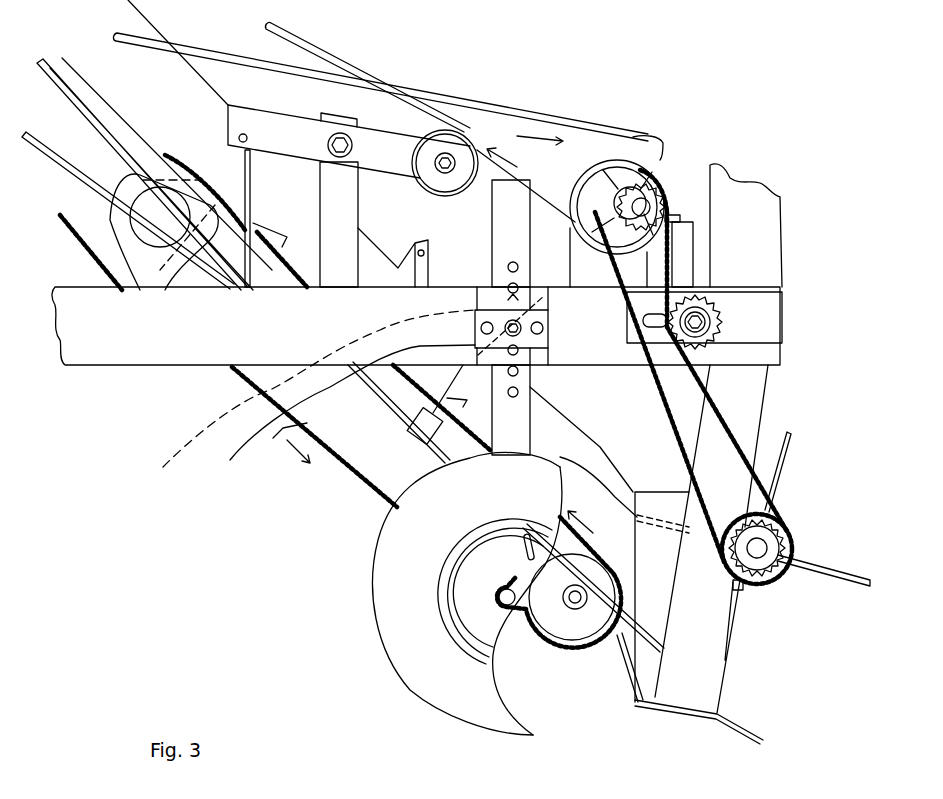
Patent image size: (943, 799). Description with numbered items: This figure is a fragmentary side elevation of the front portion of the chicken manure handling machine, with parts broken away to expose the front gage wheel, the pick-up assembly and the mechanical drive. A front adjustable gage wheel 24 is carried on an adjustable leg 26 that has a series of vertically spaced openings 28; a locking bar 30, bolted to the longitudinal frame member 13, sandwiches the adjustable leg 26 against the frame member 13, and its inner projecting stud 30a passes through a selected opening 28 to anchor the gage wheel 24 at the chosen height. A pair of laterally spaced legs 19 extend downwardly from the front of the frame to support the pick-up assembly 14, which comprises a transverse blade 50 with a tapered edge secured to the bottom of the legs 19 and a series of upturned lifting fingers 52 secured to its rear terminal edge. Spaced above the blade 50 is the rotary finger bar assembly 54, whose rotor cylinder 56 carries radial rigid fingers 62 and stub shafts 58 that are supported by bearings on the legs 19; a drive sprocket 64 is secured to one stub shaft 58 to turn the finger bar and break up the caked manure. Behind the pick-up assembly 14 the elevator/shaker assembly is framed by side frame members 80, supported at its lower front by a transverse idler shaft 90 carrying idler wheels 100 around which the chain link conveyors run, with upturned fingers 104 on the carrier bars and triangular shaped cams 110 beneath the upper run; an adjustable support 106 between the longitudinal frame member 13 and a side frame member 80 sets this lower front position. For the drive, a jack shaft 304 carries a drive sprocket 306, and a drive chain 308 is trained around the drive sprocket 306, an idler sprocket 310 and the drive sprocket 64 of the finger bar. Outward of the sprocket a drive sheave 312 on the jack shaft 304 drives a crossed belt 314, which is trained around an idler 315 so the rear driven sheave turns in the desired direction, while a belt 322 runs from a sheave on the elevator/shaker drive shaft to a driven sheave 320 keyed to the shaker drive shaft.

The longitudinal frame member 13 is at (87, 337).
The pick-up assembly 14 is at (821, 642).
The legs 19 is at (750, 402).
The front adjustable gage wheel 24 is at (443, 690).
The adjustable leg 26 is at (520, 470).
The openings 28 is at (520, 455).
The locking bar 30 is at (341, 417).
The inner projecting stud 30a is at (307, 399).
The transverse blade 50 is at (743, 723).
The upturned lifting fingers 52 is at (617, 640).
The rotary finger bar assembly 54 is at (816, 483).
The rotor cylinder 56 is at (805, 530).
The stub shaft 58 is at (758, 551).
The rigid fingers 62 is at (843, 563).
The drive sprocket 64 is at (762, 572).
The side frame member 80 is at (128, 130).
The transverse idler shaft 90 is at (565, 593).
The idler wheel 100 is at (515, 603).
The upturned fingers 104 is at (300, 107).
The adjustable support 106 is at (470, 355).
The triangular shaped cams 110 is at (153, 225).
The jack shaft 304 is at (645, 200).
The drive sprocket 306 is at (662, 197).
The drive chain 308 is at (712, 397).
The idler sprocket 310 is at (722, 321).
The drive sheave 312 is at (636, 137).
The belt 314 is at (534, 108).
The idler 315 is at (453, 145).
The driven sheave 320 is at (148, 232).
The belt 322 is at (50, 65).